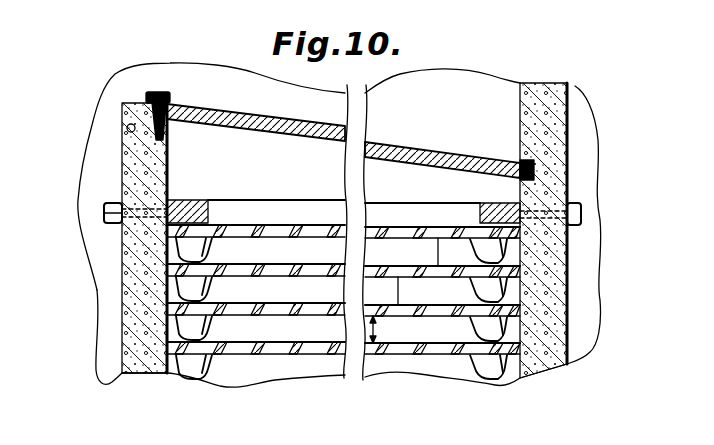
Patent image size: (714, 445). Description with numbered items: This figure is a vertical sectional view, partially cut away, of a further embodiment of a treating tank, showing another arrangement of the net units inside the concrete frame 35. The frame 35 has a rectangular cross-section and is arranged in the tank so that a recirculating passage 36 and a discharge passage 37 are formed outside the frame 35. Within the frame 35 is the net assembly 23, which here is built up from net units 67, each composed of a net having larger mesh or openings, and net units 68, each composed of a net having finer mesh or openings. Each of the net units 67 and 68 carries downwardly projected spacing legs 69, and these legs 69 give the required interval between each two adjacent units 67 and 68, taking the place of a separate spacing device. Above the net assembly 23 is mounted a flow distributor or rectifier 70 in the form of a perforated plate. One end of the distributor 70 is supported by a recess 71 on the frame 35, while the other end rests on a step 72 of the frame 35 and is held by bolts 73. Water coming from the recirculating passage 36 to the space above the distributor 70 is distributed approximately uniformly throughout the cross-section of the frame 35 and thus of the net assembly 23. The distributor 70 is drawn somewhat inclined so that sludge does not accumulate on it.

The net assembly 23 is at (265, 358).
The frame 35 is at (130, 161).
The recirculating passage 36 is at (102, 217).
The discharge passage 37 is at (582, 212).
The net unit 67 is at (272, 226).
The net unit 68 is at (432, 352).
The spacing leg 69 is at (187, 248).
The flow distributor 70 is at (244, 113).
The recess 71 is at (536, 172).
The step 72 is at (127, 127).
The bolt 73 is at (157, 92).